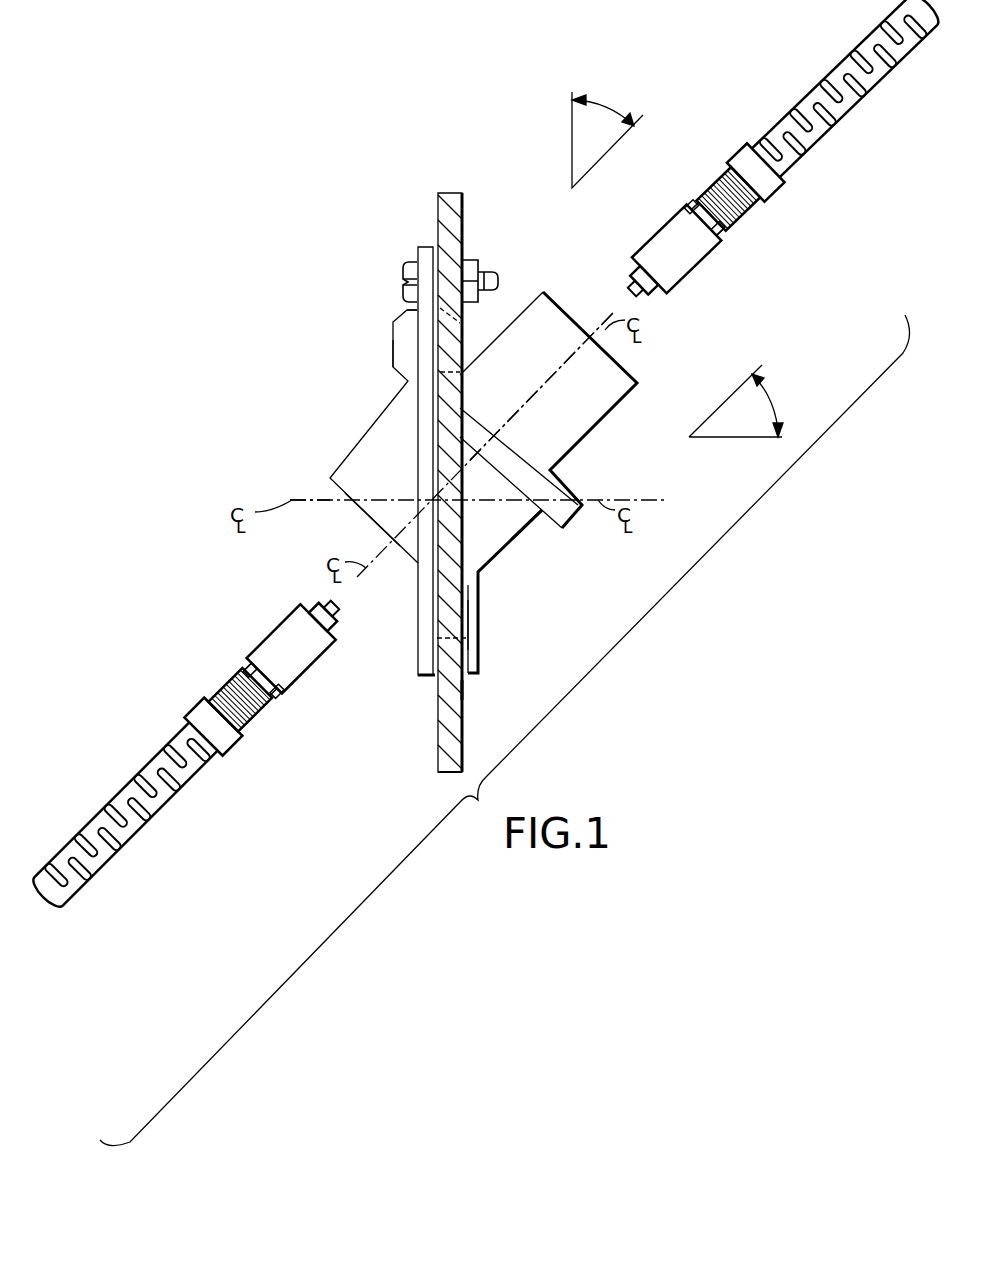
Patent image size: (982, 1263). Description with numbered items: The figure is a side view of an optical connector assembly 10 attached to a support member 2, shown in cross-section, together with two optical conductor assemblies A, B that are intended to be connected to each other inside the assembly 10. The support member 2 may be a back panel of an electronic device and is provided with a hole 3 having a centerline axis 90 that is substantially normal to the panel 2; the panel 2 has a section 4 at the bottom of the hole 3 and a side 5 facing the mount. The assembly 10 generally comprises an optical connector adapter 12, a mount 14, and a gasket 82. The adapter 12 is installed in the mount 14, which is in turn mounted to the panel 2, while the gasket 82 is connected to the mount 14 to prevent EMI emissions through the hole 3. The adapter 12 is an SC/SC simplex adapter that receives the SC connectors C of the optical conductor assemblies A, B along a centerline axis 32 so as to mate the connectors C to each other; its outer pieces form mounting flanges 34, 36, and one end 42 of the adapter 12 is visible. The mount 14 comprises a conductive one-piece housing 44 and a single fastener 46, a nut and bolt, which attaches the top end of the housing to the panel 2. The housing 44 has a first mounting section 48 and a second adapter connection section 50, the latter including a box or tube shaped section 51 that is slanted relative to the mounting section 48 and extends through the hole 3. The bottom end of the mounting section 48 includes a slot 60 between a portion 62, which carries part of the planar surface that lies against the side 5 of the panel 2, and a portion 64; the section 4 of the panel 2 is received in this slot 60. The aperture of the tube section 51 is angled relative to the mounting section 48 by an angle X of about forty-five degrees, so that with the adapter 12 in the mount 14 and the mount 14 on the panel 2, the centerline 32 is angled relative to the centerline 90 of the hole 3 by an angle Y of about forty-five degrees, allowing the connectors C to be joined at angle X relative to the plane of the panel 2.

The support member 2 is at (452, 213).
The hole 3 is at (458, 318).
The section of the panel 4 is at (455, 680).
The side of the panel 5 is at (441, 745).
The optical connector assembly 10 is at (488, 480).
The optical connector adapter 12 is at (573, 423).
The mount 14 is at (333, 486).
The centerline axis 32 is at (553, 378).
The mounting flange 34 is at (565, 530).
The mounting flange 36 is at (408, 367).
The end of the adapter 42 is at (640, 389).
The housing 44 is at (497, 560).
The fastener 46 is at (405, 268).
The first mounting section 48 is at (424, 676).
The second adapter connection section 50 is at (368, 514).
The tube shaped section 51 is at (527, 520).
The slot 60 is at (466, 628).
The portion 62 is at (418, 638).
The portion 64 is at (468, 638).
The gasket 82 is at (408, 313).
The centerline axis of the hole 90 is at (292, 500).
The optical conductor assembly A is at (656, 232).
The optical conductor assembly B is at (284, 624).
The SC connector C is at (700, 270).
The angle X is at (603, 110).
The angle Y is at (778, 400).